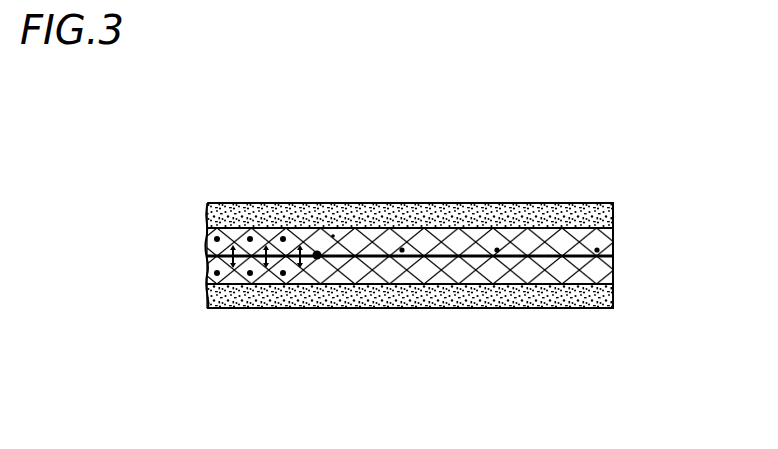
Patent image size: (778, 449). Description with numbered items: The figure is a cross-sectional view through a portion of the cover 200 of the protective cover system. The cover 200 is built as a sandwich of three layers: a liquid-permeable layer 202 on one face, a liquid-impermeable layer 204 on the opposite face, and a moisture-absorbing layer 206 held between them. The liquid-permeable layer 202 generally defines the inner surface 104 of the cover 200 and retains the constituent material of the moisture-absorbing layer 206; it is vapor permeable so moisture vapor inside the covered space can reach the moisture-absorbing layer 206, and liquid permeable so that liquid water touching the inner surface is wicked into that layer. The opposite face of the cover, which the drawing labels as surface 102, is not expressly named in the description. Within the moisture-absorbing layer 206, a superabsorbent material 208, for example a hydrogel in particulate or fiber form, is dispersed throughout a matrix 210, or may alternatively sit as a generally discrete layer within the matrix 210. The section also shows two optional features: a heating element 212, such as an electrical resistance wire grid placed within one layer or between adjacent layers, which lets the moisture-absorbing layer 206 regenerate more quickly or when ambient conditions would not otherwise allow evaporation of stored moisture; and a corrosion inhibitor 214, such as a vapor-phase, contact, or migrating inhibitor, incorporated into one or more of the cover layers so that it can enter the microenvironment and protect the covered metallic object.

The cover 200 is at (260, 115).
The first outer layer 102 is at (342, 203).
The inner surface 104 is at (310, 308).
The liquid-permeable layer 202 is at (433, 302).
The liquid-impermeable layer 204 is at (573, 203).
The moisture-absorbing layer 206 is at (628, 228).
The superabsorbent material 208 is at (542, 258).
The matrix 210 is at (521, 258).
The heating element 212 is at (207, 209).
The corrosion inhibitor 214 is at (233, 203).